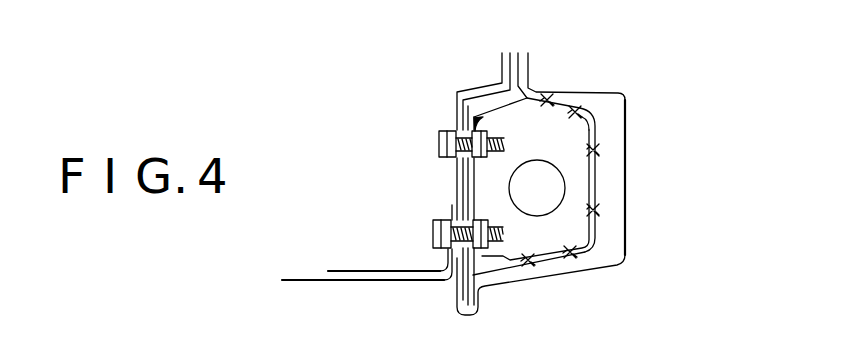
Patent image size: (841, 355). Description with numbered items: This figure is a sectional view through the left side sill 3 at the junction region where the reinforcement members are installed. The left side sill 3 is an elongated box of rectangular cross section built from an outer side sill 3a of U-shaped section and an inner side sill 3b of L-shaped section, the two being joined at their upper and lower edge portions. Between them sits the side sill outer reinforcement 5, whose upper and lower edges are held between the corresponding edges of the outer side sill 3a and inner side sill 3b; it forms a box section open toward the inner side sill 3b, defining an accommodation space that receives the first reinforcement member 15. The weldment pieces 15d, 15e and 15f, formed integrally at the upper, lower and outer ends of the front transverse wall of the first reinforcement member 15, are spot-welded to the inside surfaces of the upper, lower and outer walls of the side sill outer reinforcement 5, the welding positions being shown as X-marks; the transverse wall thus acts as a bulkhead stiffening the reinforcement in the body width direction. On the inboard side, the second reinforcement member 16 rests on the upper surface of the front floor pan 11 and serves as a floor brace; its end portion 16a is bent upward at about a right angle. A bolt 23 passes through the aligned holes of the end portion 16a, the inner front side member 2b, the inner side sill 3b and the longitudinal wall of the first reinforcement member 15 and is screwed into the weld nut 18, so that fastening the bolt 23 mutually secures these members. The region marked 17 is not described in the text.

The left side sill 3 is at (632, 89).
The outer side sill 3a is at (628, 237).
The inner side sill 3b is at (459, 192).
The inner front side member 2b is at (455, 172).
The side sill outer reinforcement 5 is at (597, 190).
The front floor pan 11 is at (315, 281).
The first reinforcement member 15 is at (578, 181).
The weldment piece 15d is at (569, 98).
The weldment piece 15e is at (560, 276).
The weldment piece 15f is at (598, 133).
The second reinforcement member 16 is at (343, 270).
The end portion 16a is at (443, 264).
The weld 17 is at (479, 113).
The weld nut 18 is at (482, 249).
The bolt 23 is at (437, 132).